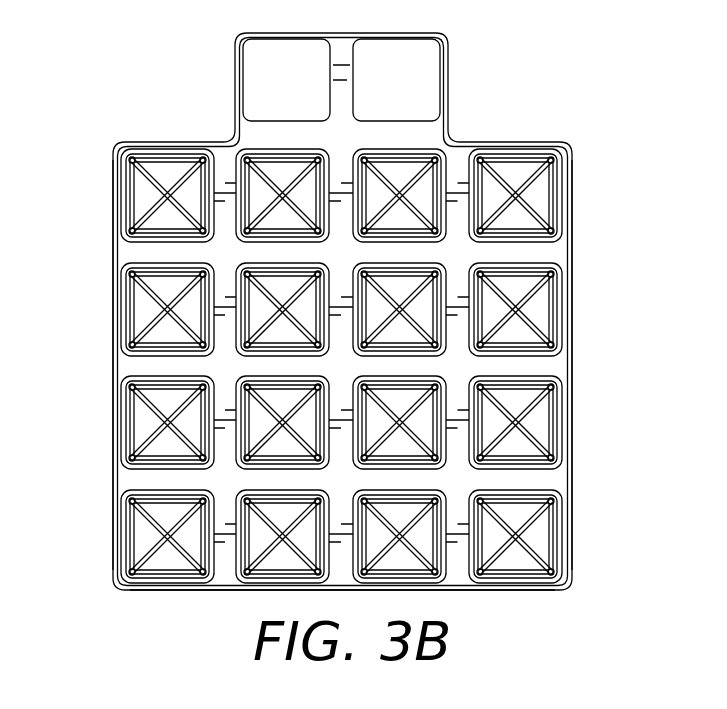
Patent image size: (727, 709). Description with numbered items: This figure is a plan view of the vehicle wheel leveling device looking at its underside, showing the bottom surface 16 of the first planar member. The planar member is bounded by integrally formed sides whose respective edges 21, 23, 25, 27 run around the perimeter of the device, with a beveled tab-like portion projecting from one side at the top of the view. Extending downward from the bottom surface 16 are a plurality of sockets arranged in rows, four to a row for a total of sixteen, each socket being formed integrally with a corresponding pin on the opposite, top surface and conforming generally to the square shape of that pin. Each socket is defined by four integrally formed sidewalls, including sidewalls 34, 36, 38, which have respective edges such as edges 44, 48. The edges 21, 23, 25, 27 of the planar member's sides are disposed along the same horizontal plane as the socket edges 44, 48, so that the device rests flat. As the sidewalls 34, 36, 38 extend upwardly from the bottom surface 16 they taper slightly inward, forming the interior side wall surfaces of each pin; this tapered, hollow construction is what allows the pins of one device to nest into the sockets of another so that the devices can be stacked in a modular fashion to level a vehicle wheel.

The bottom surface 16 is at (548, 367).
The edge 21 is at (575, 202).
The edge 23 is at (177, 142).
The edge 25 is at (112, 372).
The edge 27 is at (460, 589).
The sidewall 34 is at (157, 460).
The sidewall 36 is at (168, 229).
The sidewall 38 is at (137, 194).
The edge 44 is at (516, 242).
The edge 48 is at (458, 177).